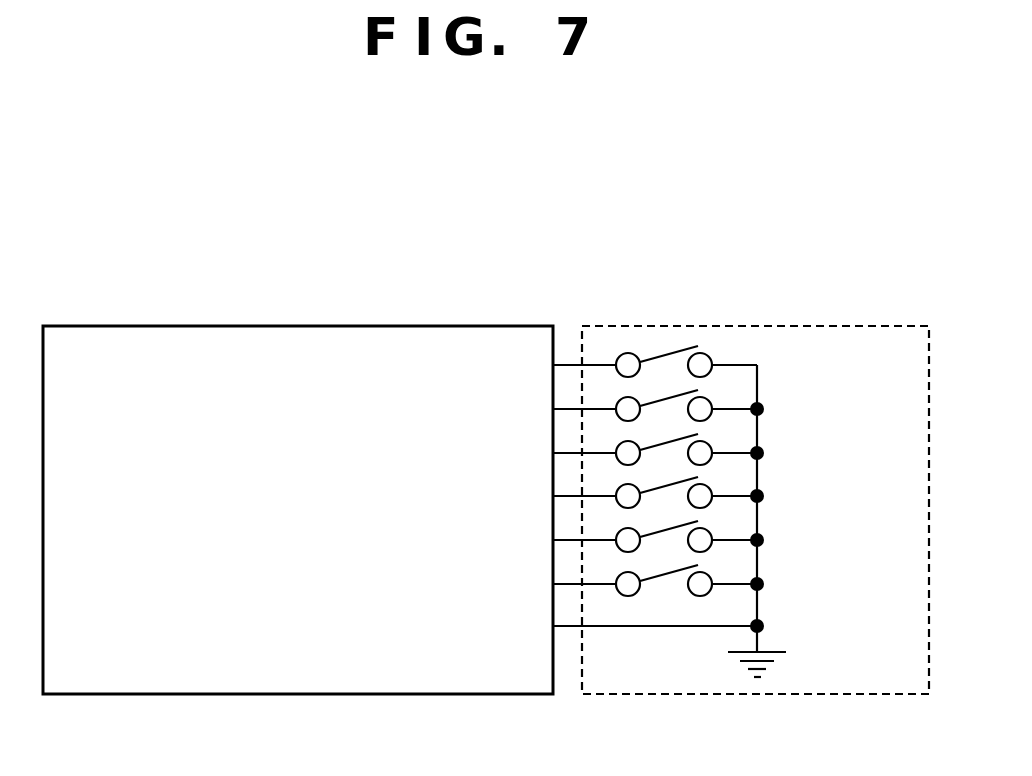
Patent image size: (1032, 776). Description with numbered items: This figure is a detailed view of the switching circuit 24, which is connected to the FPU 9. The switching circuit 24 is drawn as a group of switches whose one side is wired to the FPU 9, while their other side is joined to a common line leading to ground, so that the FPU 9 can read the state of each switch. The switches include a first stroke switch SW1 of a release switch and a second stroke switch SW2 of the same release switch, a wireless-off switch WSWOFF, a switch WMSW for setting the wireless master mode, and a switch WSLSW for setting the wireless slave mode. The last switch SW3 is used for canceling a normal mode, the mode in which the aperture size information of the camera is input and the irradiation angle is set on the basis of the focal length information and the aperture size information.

The FPU 9 is at (377, 327).
The switching circuit 24 is at (741, 460).
The first stroke switch SW1 is at (697, 364).
The second stroke switch SW2 is at (697, 408).
The wireless-off switch WSWOFF is at (731, 452).
The wireless master mode setting switch WMSW is at (715, 495).
The wireless slave mode setting switch WSLSW is at (720, 539).
The normal mode canceling switch SW3 is at (697, 583).